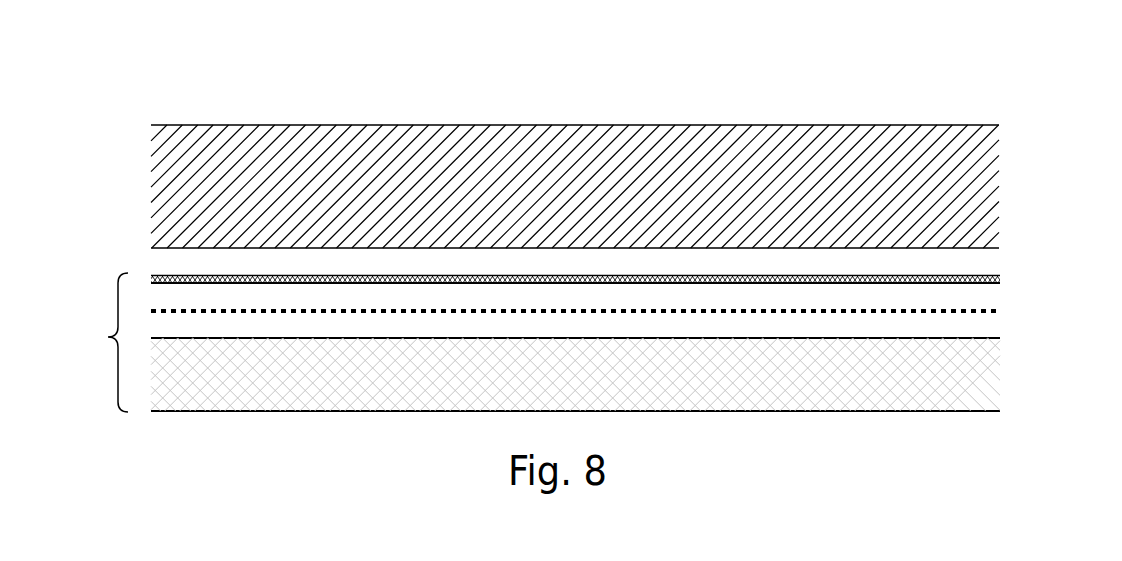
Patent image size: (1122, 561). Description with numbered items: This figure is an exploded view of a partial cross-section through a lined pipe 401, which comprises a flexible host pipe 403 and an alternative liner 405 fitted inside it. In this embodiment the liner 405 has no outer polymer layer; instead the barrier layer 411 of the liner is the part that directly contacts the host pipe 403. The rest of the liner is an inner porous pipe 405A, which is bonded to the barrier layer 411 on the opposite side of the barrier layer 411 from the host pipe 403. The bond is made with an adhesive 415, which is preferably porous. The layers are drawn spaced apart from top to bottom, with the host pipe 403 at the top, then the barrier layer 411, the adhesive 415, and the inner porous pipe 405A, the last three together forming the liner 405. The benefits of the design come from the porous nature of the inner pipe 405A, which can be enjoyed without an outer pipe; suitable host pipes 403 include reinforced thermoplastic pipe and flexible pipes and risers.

The lined pipe 401 is at (1009, 95).
The flexible host pipe 403 is at (981, 169).
The liner 405 is at (90, 342).
The inner porous pipe 405A is at (980, 372).
The barrier layer 411 is at (992, 277).
The adhesive 415 is at (990, 312).